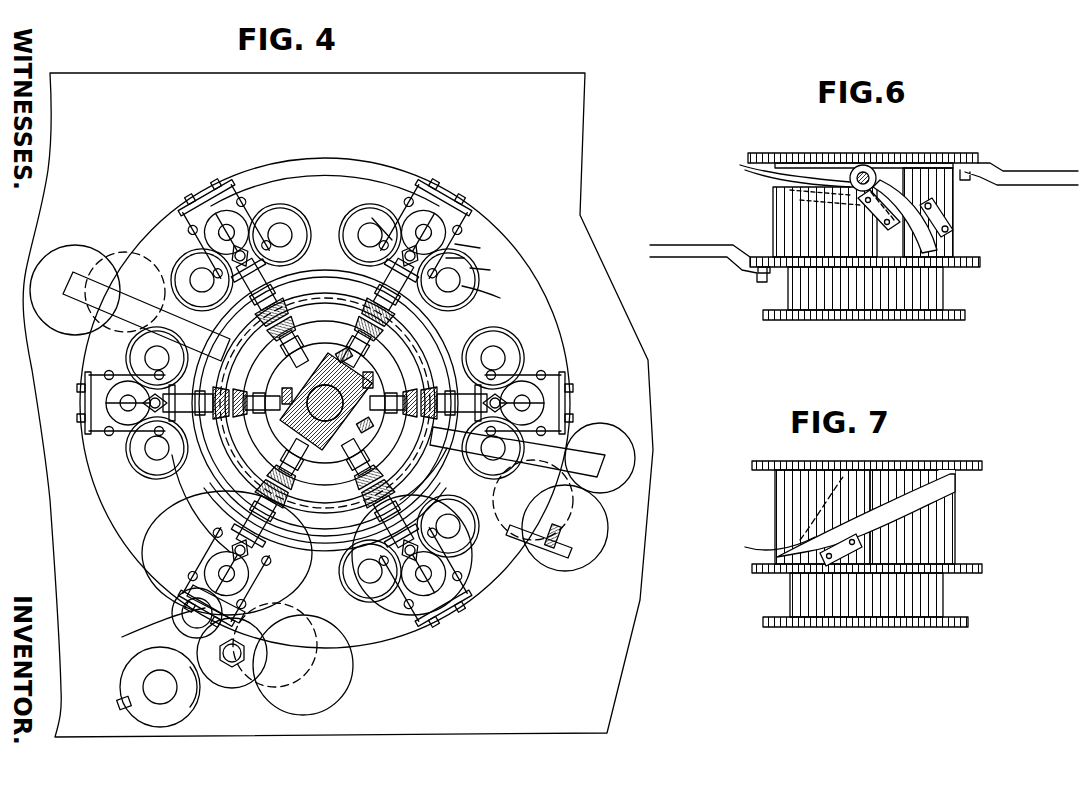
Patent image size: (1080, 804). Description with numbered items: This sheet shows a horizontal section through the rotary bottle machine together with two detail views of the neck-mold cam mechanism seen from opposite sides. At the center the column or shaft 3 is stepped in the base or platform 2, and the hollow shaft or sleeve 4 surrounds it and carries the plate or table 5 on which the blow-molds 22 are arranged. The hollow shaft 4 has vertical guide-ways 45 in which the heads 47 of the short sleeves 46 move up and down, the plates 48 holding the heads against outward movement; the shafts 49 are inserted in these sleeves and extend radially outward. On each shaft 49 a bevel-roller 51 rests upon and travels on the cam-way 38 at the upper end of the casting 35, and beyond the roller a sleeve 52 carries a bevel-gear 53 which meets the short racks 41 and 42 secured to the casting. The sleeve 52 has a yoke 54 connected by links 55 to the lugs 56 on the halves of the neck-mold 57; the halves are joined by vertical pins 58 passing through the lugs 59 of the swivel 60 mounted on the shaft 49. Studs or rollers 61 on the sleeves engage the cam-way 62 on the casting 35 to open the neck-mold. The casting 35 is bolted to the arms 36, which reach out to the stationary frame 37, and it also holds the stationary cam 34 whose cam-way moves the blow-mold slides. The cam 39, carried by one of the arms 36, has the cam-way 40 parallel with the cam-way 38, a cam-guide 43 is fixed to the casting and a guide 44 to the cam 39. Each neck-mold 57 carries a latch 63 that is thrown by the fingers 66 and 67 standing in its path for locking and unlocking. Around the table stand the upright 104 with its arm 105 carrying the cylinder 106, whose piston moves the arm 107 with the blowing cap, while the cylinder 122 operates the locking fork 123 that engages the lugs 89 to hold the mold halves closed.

In FIG. 4, the base or platform 2 is at (648, 400).
In FIG. 4, the column or shaft 3 is at (324, 428).
In FIG. 4, the hollow shaft or sleeve 4 is at (296, 432).
In FIG. 4, the plate or table 5 is at (554, 328).
In FIG. 4, the blow-molds 22 is at (290, 225).
In FIG. 4, the stationary cam 34 is at (201, 503).
In FIG. 4, the casting 35 is at (252, 345).
In FIG. 6, the casting 35 is at (800, 205).
In FIG. 7, the casting 35 is at (930, 545).
In FIG. 4, the arms 36 is at (334, 374).
In FIG. 6, the arms 36 is at (1030, 175).
In FIG. 4, the stationary frame 37 is at (332, 480).
In FIG. 4, the cam-way 38 is at (350, 446).
In FIG. 6, the cam-way 38 is at (800, 186).
In FIG. 7, the cam-way 38 is at (880, 510).
In FIG. 6, the cam 39 is at (940, 200).
In FIG. 7, the cam 39 is at (785, 495).
In FIG. 6, the cam-way 40 is at (760, 170).
In FIG. 4, the short rack 41 is at (290, 410).
In FIG. 6, the short rack 41 is at (865, 208).
In FIG. 4, the short rack 42 is at (440, 435).
In FIG. 7, the short rack 42 is at (782, 547).
In FIG. 6, the cam-guide 43 is at (930, 246).
In FIG. 6, the guide 44 is at (952, 225).
In FIG. 4, the vertical guide-ways 45 is at (292, 390).
In FIG. 4, the short sleeves 46 is at (345, 355).
In FIG. 4, the heads 47 is at (366, 424).
In FIG. 4, the plates 48 is at (366, 382).
In FIG. 4, the shafts 49 is at (388, 333).
In FIG. 6, the shafts 49 is at (868, 172).
In FIG. 4, the bevel-rollers 51 is at (388, 344).
In FIG. 4, the sleeves 52 is at (338, 403).
In FIG. 4, the bevel-gears 53 is at (360, 330).
In FIG. 6, the bevel-gears 53 is at (863, 165).
In FIG. 4, the yokes 54 is at (358, 272).
In FIG. 4, the links 55 is at (468, 256).
In FIG. 4, the lugs 56 is at (482, 248).
In FIG. 4, the neck-mold 57 is at (240, 228).
In FIG. 4, the vertical pins 58 is at (495, 269).
In FIG. 4, the lugs 59 is at (385, 217).
In FIG. 4, the swivel 60 is at (497, 293).
In FIG. 4, the studs or rollers 61 is at (385, 288).
In FIG. 4, the cam-way 62 is at (325, 537).
In FIG. 4, the latch 63 is at (435, 232).
In FIG. 4, the finger 66 is at (248, 596).
In FIG. 4, the finger 67 is at (520, 532).
In FIG. 4, the lugs 89 is at (145, 627).
In FIG. 4, the upright 104 is at (135, 686).
In FIG. 4, the arm 105 is at (195, 700).
In FIG. 4, the cylinder 106 is at (232, 676).
In FIG. 4, the arm 107 is at (270, 630).
In FIG. 4, the cylinder 122 is at (174, 611).
In FIG. 4, the locking fork 123 is at (183, 598).